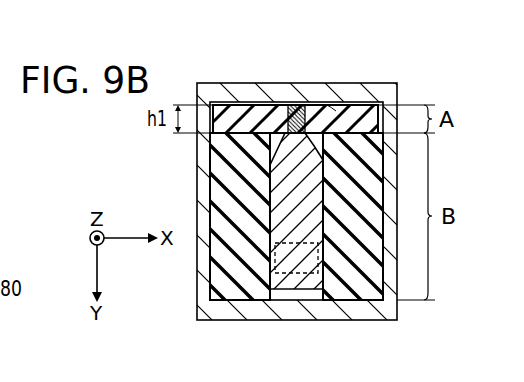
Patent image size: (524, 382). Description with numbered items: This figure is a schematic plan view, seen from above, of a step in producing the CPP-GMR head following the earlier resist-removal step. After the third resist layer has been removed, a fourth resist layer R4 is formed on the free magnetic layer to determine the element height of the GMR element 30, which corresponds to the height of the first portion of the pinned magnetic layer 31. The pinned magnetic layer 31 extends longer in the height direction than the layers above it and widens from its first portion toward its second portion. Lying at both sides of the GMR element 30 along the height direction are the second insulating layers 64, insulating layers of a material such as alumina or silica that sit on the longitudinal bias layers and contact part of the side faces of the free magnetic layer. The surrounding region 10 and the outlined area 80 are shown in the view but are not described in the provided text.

The substrate 10 is at (390, 83).
The GMR element 30 is at (291, 103).
The fourth resist layer R4 is at (327, 105).
The second insulating layers 64 is at (256, 300).
The pinned magnetic layer 31 is at (290, 290).
The region 80 is at (309, 274).